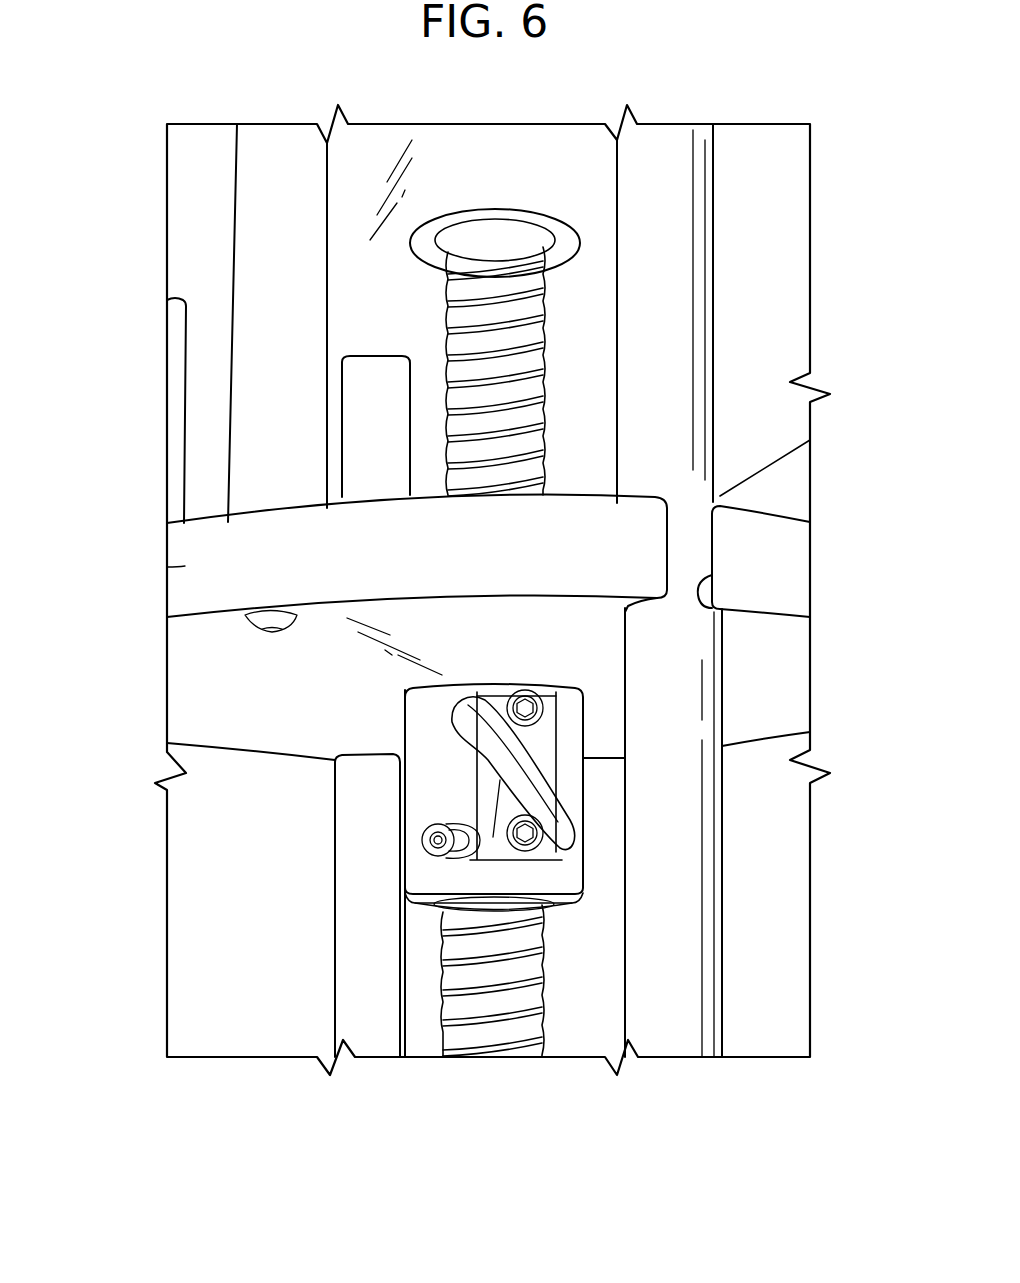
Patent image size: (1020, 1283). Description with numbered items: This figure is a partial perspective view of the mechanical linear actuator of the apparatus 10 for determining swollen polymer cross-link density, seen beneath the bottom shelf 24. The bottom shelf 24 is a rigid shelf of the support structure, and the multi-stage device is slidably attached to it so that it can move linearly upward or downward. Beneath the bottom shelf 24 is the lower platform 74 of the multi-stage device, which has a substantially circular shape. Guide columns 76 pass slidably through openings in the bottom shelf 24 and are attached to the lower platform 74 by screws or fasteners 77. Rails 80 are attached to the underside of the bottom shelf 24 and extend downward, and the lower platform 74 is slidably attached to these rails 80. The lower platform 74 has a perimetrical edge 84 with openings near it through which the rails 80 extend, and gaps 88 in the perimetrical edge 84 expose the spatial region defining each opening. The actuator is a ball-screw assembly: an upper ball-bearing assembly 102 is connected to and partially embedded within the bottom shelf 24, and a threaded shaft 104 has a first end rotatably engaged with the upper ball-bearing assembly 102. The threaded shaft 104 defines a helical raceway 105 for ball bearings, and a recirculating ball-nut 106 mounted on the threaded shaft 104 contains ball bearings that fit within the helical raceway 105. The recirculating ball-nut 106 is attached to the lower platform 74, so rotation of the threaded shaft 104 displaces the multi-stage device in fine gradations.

The apparatus 10 is at (72, 132).
The bottom shelf 24 is at (550, 165).
The lower platform 74 is at (185, 568).
The guide columns 76 is at (282, 343).
The screws or fasteners 77 is at (262, 630).
The rails 80 is at (708, 850).
The perimetrical edge 84 is at (792, 572).
The gaps 88 is at (705, 577).
The upper ball-bearing assembly 102 is at (572, 272).
The threaded shaft 104 is at (542, 430).
The helical raceway 105 is at (452, 1006).
The recirculating ball-nut 106 is at (575, 877).